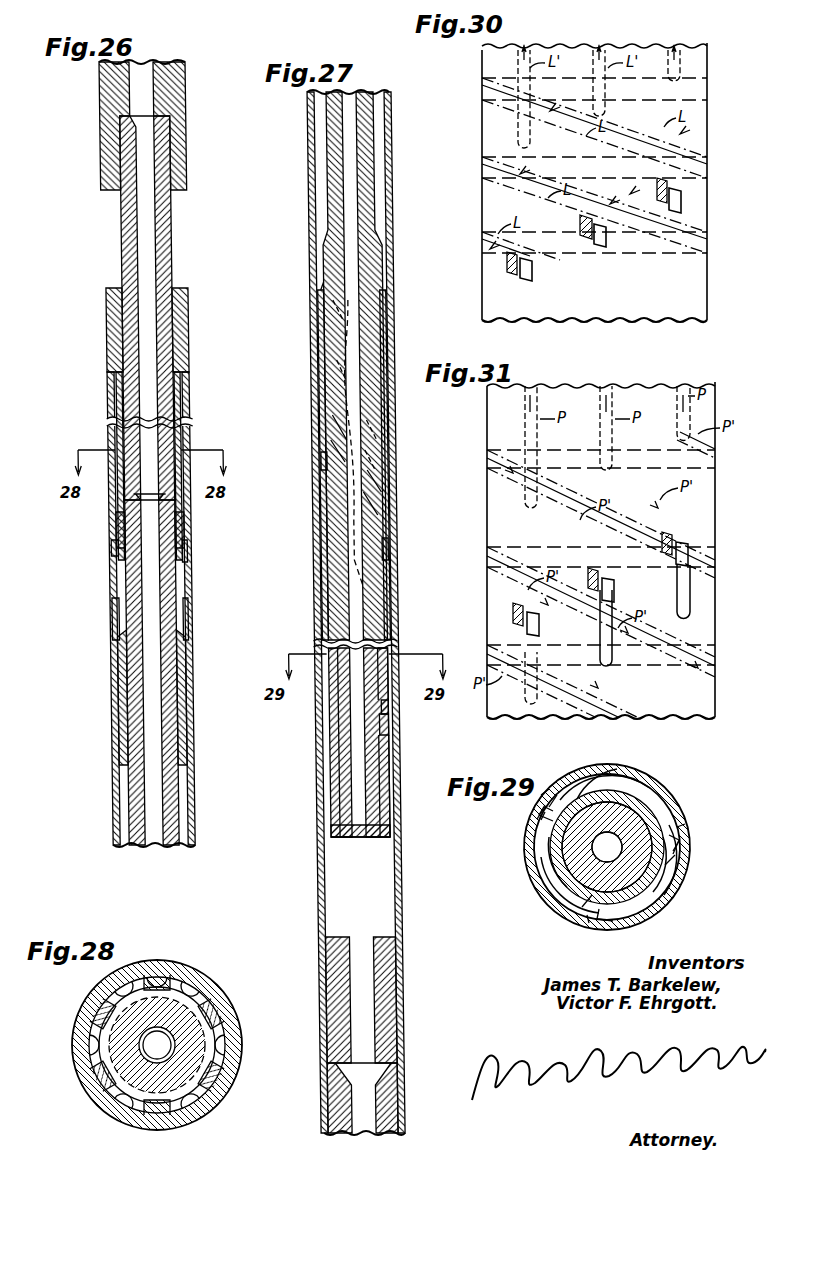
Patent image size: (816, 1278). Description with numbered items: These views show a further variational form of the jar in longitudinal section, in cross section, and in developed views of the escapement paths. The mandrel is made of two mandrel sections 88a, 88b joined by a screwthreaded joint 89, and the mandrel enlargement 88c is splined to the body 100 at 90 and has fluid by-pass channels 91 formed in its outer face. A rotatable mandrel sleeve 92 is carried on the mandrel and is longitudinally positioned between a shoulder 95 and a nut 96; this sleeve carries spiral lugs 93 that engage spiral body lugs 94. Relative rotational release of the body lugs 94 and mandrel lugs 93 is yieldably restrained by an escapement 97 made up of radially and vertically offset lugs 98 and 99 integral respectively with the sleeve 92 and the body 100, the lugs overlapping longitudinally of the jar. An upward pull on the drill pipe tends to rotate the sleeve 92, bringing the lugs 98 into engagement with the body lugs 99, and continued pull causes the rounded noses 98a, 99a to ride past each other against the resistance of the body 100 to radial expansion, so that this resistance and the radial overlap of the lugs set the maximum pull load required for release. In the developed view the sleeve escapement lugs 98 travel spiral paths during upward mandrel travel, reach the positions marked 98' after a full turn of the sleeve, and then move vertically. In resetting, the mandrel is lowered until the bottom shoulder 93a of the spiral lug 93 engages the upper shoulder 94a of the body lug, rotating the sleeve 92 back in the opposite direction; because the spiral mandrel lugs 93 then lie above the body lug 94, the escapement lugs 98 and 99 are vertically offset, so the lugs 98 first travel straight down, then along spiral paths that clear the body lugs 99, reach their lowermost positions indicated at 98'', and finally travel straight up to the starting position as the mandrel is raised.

In FIG. 26, the mandrel section 88a is at (168, 412).
In FIG. 28, the mandrel section 88a is at (158, 1085).
In FIG. 26, the mandrel section 88b is at (162, 620).
In FIG. 27, the mandrel section 88b is at (372, 178).
In FIG. 26, the mandrel enlargement 88c is at (178, 510).
In FIG. 26, the screwthreaded joint 89 is at (174, 528).
In FIG. 26, the spline 90 is at (108, 548).
In FIG. 28, the spline 90 is at (162, 978).
In FIG. 26, the fluid by-pass channels 91 is at (182, 551).
In FIG. 28, the fluid by-pass channels 91 is at (190, 990).
In FIG. 27, the rotatable mandrel sleeve 92 is at (386, 600).
In FIG. 29, the rotatable mandrel sleeve 92 is at (645, 915).
In FIG. 27, the spiral lugs 93 is at (323, 432).
In FIG. 27, the bottom shoulder 93a is at (323, 458).
In FIG. 27, the spiral body lugs 94 is at (330, 368).
In FIG. 27, the upper shoulder 94a is at (320, 312).
In FIG. 27, the shoulder 95 is at (388, 295).
In FIG. 27, the nut 96 is at (394, 829).
In FIG. 27, the escapement 97 is at (416, 717).
In FIG. 29, the escapement 97 is at (651, 787).
In FIG. 27, the escapement lugs 98 is at (413, 731).
In FIG. 29, the escapement lugs 98 is at (586, 878).
In FIG. 30, the escapement lugs 98 is at (630, 242).
In FIG. 31, the escapement lugs 98 is at (600, 601).
In FIG. 30, the escapement lug positions 98' is at (596, 96).
In FIG. 31, the longitudinal slot 98'' is at (607, 545).
In FIG. 29, the rounded noses 98a is at (550, 806).
In FIG. 27, the body lugs 99 is at (393, 700).
In FIG. 29, the body lugs 99 is at (582, 770).
In FIG. 30, the body lugs 99 is at (667, 180).
In FIG. 31, the body lugs 99 is at (670, 540).
In FIG. 29, the rounded noses 99a is at (575, 790).
In FIG. 27, the body 100 is at (400, 622).
In FIG. 29, the body 100 is at (668, 800).